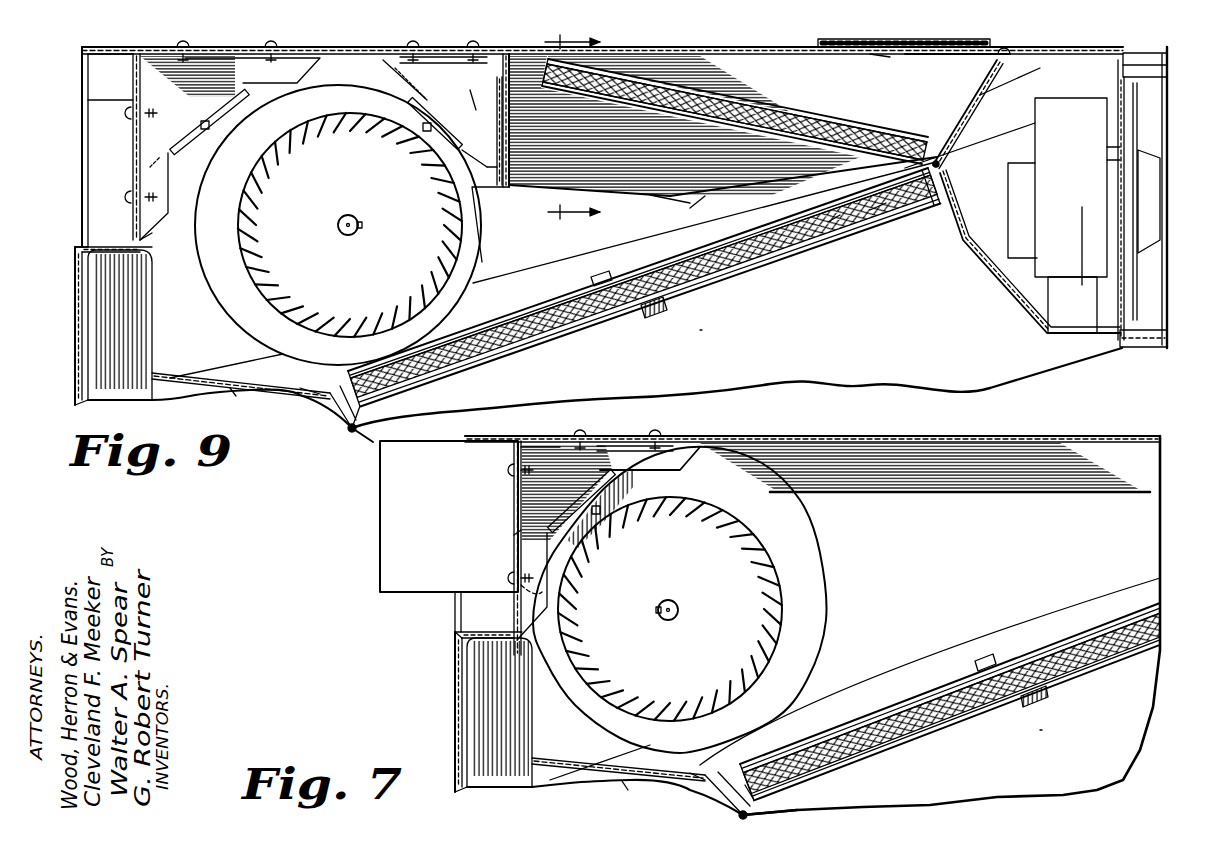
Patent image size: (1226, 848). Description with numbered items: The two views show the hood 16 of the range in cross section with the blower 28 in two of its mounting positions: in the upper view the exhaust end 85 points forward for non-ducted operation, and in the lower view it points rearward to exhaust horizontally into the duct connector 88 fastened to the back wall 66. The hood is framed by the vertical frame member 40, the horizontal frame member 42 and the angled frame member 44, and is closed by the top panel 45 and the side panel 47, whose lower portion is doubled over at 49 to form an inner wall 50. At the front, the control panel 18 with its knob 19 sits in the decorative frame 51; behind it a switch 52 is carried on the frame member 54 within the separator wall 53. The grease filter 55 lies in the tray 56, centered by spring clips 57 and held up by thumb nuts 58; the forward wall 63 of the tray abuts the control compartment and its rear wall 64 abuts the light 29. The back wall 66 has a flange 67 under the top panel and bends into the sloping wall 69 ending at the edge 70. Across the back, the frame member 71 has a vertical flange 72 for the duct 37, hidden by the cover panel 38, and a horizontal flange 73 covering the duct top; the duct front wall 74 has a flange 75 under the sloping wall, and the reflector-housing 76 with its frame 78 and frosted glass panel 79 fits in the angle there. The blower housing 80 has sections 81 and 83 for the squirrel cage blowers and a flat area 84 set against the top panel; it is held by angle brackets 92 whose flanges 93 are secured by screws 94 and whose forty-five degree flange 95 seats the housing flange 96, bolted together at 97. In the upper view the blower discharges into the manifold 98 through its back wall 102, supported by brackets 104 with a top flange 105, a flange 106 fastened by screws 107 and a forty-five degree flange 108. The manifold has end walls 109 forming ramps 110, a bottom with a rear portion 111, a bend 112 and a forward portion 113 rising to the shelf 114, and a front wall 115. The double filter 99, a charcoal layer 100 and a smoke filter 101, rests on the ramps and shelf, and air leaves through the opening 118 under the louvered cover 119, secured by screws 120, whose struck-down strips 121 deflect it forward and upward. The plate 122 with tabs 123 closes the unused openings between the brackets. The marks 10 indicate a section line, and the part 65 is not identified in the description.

In FIG. 9, the section line 10- 10 is at (573, 125).
In FIG. 9, the hood 16 is at (671, 370).
In FIG. 7, the hood 16 is at (951, 625).
In FIG. 9, the control panel 18 is at (1168, 114).
In FIG. 9, the control knob 19 is at (1150, 170).
In FIG. 9, the blower 28 is at (456, 296).
In FIG. 7, the blower 28 is at (826, 554).
In FIG. 9, the source of illumination 29 is at (352, 435).
In FIG. 7, the source of illumination 29 is at (754, 812).
In FIG. 9, the duct 37 is at (150, 341).
In FIG. 7, the duct 37 is at (527, 741).
In FIG. 9, the cover panel 38 is at (75, 372).
In FIG. 7, the cover panel 38 is at (452, 715).
In FIG. 9, the vertical frame member 40 is at (80, 211).
In FIG. 7, the vertical frame member 40 is at (455, 622).
In FIG. 9, the horizontal frame member 42 is at (78, 72).
In FIG. 7, the horizontal frame member 42 is at (968, 494).
In FIG. 9, the angled frame member 44 is at (265, 396).
In FIG. 7, the angled frame member 44 is at (729, 721).
In FIG. 9, the top panel 45 is at (126, 62).
In FIG. 7, the top panel 45 is at (972, 441).
In FIG. 9, the side panel 47 is at (704, 222).
In FIG. 7, the side panel 47 is at (930, 669).
In FIG. 9, the doubled-over lower portion 49 is at (990, 390).
In FIG. 9, the inner wall 50 is at (733, 338).
In FIG. 7, the inner wall 50 is at (1066, 737).
In FIG. 9, the decorative frame 51 is at (1148, 349).
In FIG. 9, the switch 52 is at (1057, 215).
In FIG. 9, the separator wall 53 is at (970, 246).
In FIG. 9, the frame member 54 is at (1108, 160).
In FIG. 9, the grease filter 55 is at (792, 242).
In FIG. 7, the grease filter 55 is at (1065, 640).
In FIG. 9, the tray 56 is at (762, 270).
In FIG. 7, the tray 56 is at (1086, 673).
In FIG. 9, the spring clip 57 is at (608, 272).
In FIG. 7, the spring clip 57 is at (990, 656).
In FIG. 9, the thumb nut 58 is at (652, 320).
In FIG. 7, the thumb nut 58 is at (1030, 708).
In FIG. 9, the forward wall of tray 63 is at (936, 200).
In FIG. 9, the rear wall of tray 64 is at (372, 398).
In FIG. 7, the rear wall of tray 64 is at (705, 790).
In FIG. 9, the filter medium 65 is at (590, 330).
In FIG. 7, the filter medium 65 is at (930, 736).
In FIG. 9, the vertical wall 66 is at (148, 233).
In FIG. 7, the vertical wall 66 is at (514, 536).
In FIG. 9, the flange 67 is at (128, 62).
In FIG. 7, the flange 67 is at (512, 448).
In FIG. 9, the sloping wall 69 is at (205, 376).
In FIG. 7, the sloping wall 69 is at (598, 775).
In FIG. 9, the edge 70 is at (315, 390).
In FIG. 7, the edge 70 is at (696, 778).
In FIG. 9, the horizontal frame member 71 is at (78, 250).
In FIG. 7, the horizontal frame member 71 is at (455, 639).
In FIG. 9, the vertical flange 72 is at (78, 291).
In FIG. 7, the vertical flange 72 is at (455, 672).
In FIG. 9, the horizontal flange 73 is at (110, 247).
In FIG. 7, the horizontal flange 73 is at (496, 632).
In FIG. 9, the front wall of duct 74 is at (148, 401).
In FIG. 7, the front wall of duct 74 is at (523, 790).
In FIG. 9, the small flange 75 is at (178, 392).
In FIG. 7, the small flange 75 is at (552, 787).
In FIG. 9, the reflector-housing 76 is at (233, 396).
In FIG. 7, the reflector-housing 76 is at (625, 786).
In FIG. 9, the frame 78 is at (374, 442).
In FIG. 7, the frame 78 is at (790, 812).
In FIG. 7, the frosted glass panel 79 is at (740, 812).
In FIG. 9, the blower housing 80 is at (338, 225).
In FIG. 9, the blower housing section 81 is at (352, 198).
In FIG. 7, the blower housing section 83 is at (670, 580).
In FIG. 9, the flat area 84 is at (380, 60).
In FIG. 7, the flat area 84 is at (612, 453).
In FIG. 9, the exhaust end 85 is at (485, 190).
In FIG. 7, the exhaust end 85 is at (500, 590).
In FIG. 7, the duct connector 88 is at (380, 558).
In FIG. 9, the angle bracket 92 is at (230, 57).
In FIG. 7, the angle bracket 92 is at (692, 462).
In FIG. 9, the flange 93 is at (133, 140).
In FIG. 7, the flange 93 is at (512, 508).
In FIG. 9, the metal screw 94 is at (125, 113).
In FIG. 7, the metal screw 94 is at (508, 473).
In FIG. 9, the third flange 95 is at (183, 138).
In FIG. 7, the third flange 95 is at (567, 520).
In FIG. 9, the housing flange 96 is at (410, 100).
In FIG. 7, the housing flange 96 is at (620, 498).
In FIG. 9, the bolt connection 97 is at (417, 145).
In FIG. 7, the bolt connection 97 is at (640, 522).
In FIG. 9, the manifold 98 is at (680, 201).
In FIG. 9, the double filter 99 is at (777, 98).
In FIG. 9, the activated charcoal layer 100 is at (838, 113).
In FIG. 9, the fiber smoke filter 101 is at (870, 130).
In FIG. 9, the back wall of manifold 102 is at (507, 60).
In FIG. 9, the angle bracket 104 is at (460, 97).
In FIG. 9, the top flange 105 is at (460, 56).
In FIG. 9, the flange 106 is at (486, 160).
In FIG. 9, the metal screw 107 is at (496, 120).
In FIG. 9, the third flange 108 is at (420, 98).
In FIG. 9, the end wall 109 is at (650, 192).
In FIG. 9, the ramp 110 is at (750, 196).
In FIG. 9, the rear bottom portion 111 is at (690, 208).
In FIG. 9, the bend 112 is at (826, 224).
In FIG. 9, the forward bottom portion 113 is at (876, 213).
In FIG. 9, the shelf 114 is at (941, 168).
In FIG. 9, the front wall 115 is at (975, 110).
In FIG. 9, the opening 118 is at (907, 57).
In FIG. 9, the louvered cover 119 is at (815, 44).
In FIG. 9, the metal screw 120 is at (1006, 52).
In FIG. 9, the struck-down strip 121 is at (882, 57).
In FIG. 9, the plate 122 is at (176, 172).
In FIG. 9, the tab 123 is at (212, 130).